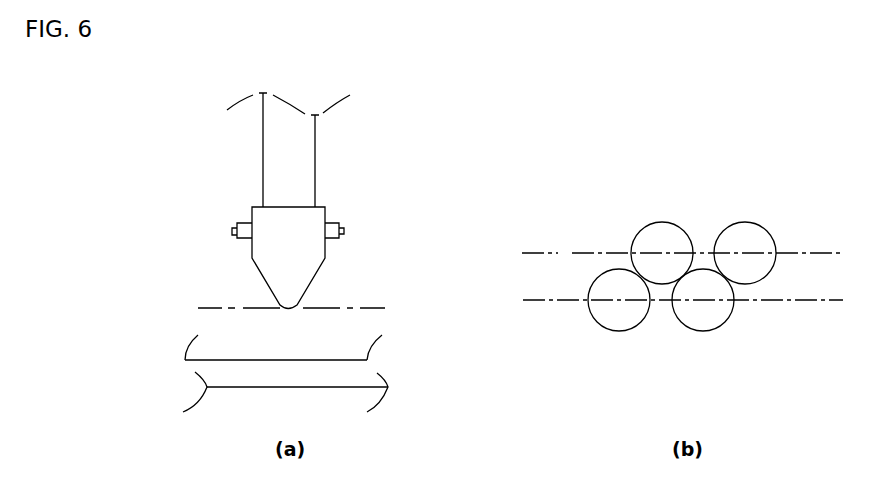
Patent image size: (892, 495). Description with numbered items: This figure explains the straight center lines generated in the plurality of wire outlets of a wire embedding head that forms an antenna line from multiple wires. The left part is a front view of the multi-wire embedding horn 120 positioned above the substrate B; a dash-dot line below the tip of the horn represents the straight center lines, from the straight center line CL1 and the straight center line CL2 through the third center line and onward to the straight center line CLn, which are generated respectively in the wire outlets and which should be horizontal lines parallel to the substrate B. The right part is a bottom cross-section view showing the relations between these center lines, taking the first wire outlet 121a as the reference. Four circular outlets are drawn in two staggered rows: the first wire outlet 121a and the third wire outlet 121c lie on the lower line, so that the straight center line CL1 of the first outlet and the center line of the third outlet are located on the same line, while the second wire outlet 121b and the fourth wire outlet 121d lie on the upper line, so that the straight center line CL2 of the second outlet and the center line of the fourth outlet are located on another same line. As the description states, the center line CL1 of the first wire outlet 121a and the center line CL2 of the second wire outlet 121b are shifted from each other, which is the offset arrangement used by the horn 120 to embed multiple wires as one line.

The multi-wire embedding horn 120 is at (263, 150).
The substrate B is at (243, 387).
The straight center line CLn is at (353, 308).
The straight center line CL1 is at (560, 300).
The straight center line CL2 is at (558, 253).
The first wire outlet 121a is at (613, 320).
The second wire outlet 121b is at (657, 232).
The third wire outlet 121c is at (710, 320).
The fourth wire outlet 121d is at (753, 232).